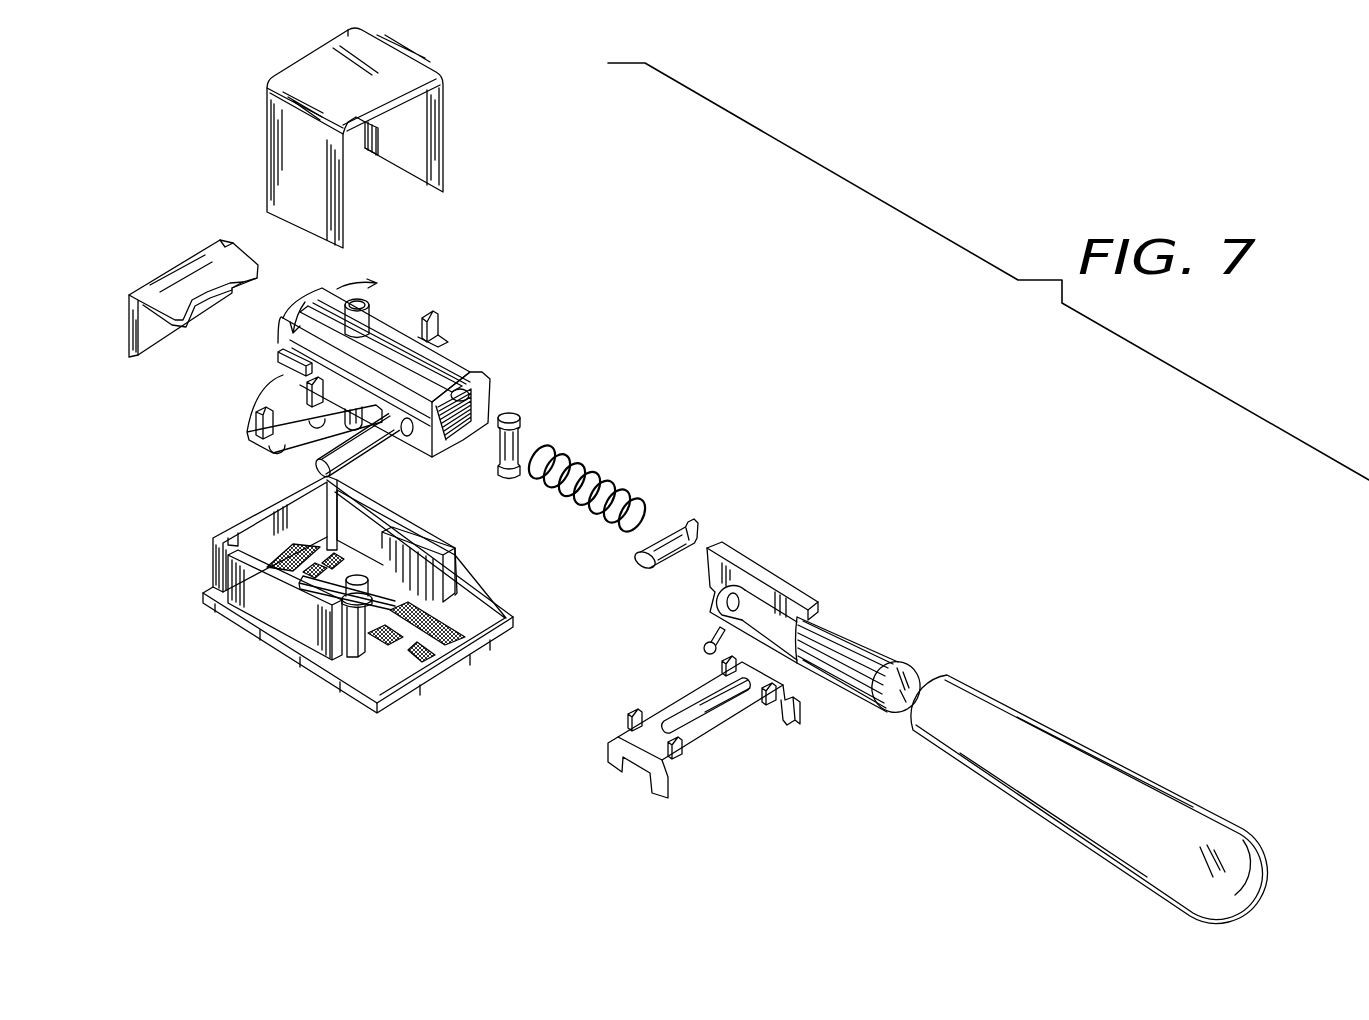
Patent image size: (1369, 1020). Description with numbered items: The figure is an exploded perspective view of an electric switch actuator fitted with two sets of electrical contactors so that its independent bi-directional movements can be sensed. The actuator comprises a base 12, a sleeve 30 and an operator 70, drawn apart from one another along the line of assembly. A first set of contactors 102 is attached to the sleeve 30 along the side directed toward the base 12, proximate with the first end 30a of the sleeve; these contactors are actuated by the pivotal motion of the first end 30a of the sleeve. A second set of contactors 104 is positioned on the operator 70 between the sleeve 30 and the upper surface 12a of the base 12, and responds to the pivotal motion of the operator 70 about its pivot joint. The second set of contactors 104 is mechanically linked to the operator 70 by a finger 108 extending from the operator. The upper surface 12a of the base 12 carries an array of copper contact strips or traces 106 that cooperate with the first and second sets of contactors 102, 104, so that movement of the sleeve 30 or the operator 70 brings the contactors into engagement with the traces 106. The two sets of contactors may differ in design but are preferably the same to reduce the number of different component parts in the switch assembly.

The base 12 is at (250, 627).
The upper surface of the base 12a is at (350, 657).
The sleeve 30 is at (458, 360).
The first end of the sleeve 30a is at (308, 297).
The operator 70 is at (923, 623).
The first set of contactors 102 is at (437, 318).
The second set of contactors 104 is at (608, 767).
The copper contact strips or traces 106 is at (450, 630).
The finger 108 is at (705, 648).